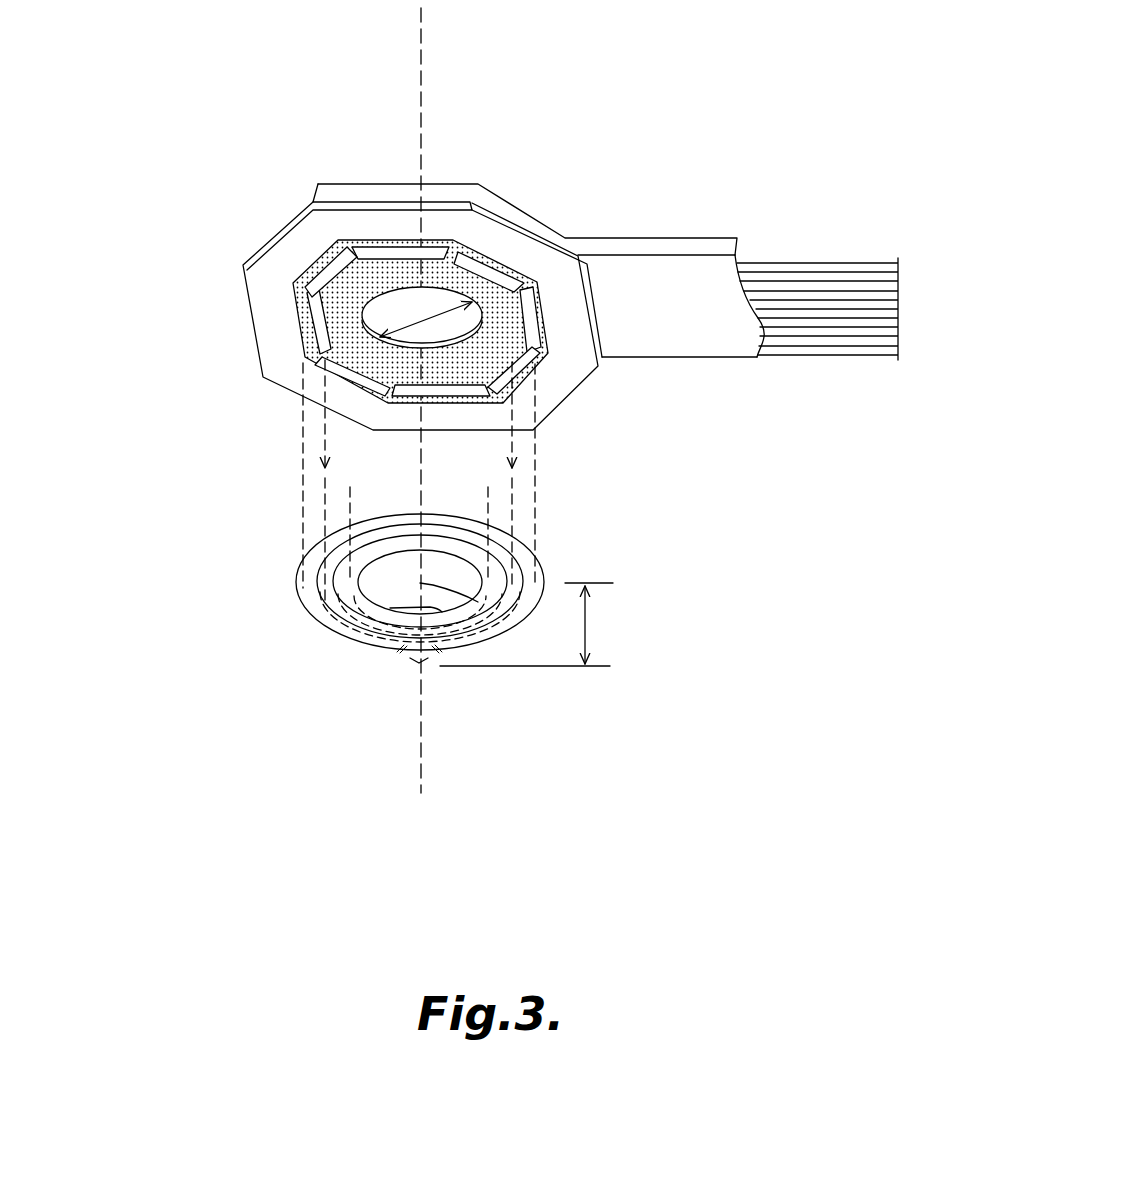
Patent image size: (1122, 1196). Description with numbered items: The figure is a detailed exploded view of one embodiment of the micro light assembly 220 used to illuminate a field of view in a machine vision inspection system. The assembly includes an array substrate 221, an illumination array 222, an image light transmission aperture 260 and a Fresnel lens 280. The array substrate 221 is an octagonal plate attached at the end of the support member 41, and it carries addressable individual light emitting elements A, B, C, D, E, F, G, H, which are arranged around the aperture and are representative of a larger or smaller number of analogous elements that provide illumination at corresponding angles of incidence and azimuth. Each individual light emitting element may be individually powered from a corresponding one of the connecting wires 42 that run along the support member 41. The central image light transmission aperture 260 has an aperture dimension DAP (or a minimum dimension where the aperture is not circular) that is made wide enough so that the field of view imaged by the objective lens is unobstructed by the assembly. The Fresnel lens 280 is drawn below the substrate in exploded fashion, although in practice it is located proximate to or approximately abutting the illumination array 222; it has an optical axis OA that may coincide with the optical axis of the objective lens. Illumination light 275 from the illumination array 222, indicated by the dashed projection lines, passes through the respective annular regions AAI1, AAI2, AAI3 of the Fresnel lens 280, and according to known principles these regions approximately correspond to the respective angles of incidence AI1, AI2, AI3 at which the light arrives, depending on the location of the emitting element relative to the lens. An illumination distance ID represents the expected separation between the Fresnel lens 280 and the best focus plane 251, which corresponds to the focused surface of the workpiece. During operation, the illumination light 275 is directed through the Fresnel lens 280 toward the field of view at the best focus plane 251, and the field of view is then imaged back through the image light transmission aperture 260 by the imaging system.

The micro light assembly 220 is at (158, 193).
The array substrate 221 is at (303, 237).
The illumination array 222 is at (370, 236).
The image light transmission aperture 260 is at (405, 302).
The optical axis OA is at (423, 33).
The aperture dimension DAP is at (442, 310).
The support member 41 is at (703, 358).
The connecting wires 42 is at (810, 238).
The illumination light 275 is at (545, 475).
The Fresnel lens 280 is at (352, 587).
The annular region AAI3 is at (350, 527).
The annular region AAI2 is at (357, 552).
The annular region AAI1 is at (372, 549).
The angle of incidence AI3 is at (477, 592).
The angle of incidence AI2 is at (395, 610).
The angle of incidence AI1 is at (430, 607).
The illumination distance ID is at (590, 627).
The best focus plane 251 is at (565, 668).
The light emitting element A is at (400, 265).
The light emitting element B is at (489, 274).
The light emitting element C is at (517, 319).
The light emitting element D is at (511, 370).
The light emitting element E is at (441, 379).
The light emitting element F is at (352, 371).
The light emitting element G is at (327, 321).
The light emitting element H is at (302, 278).